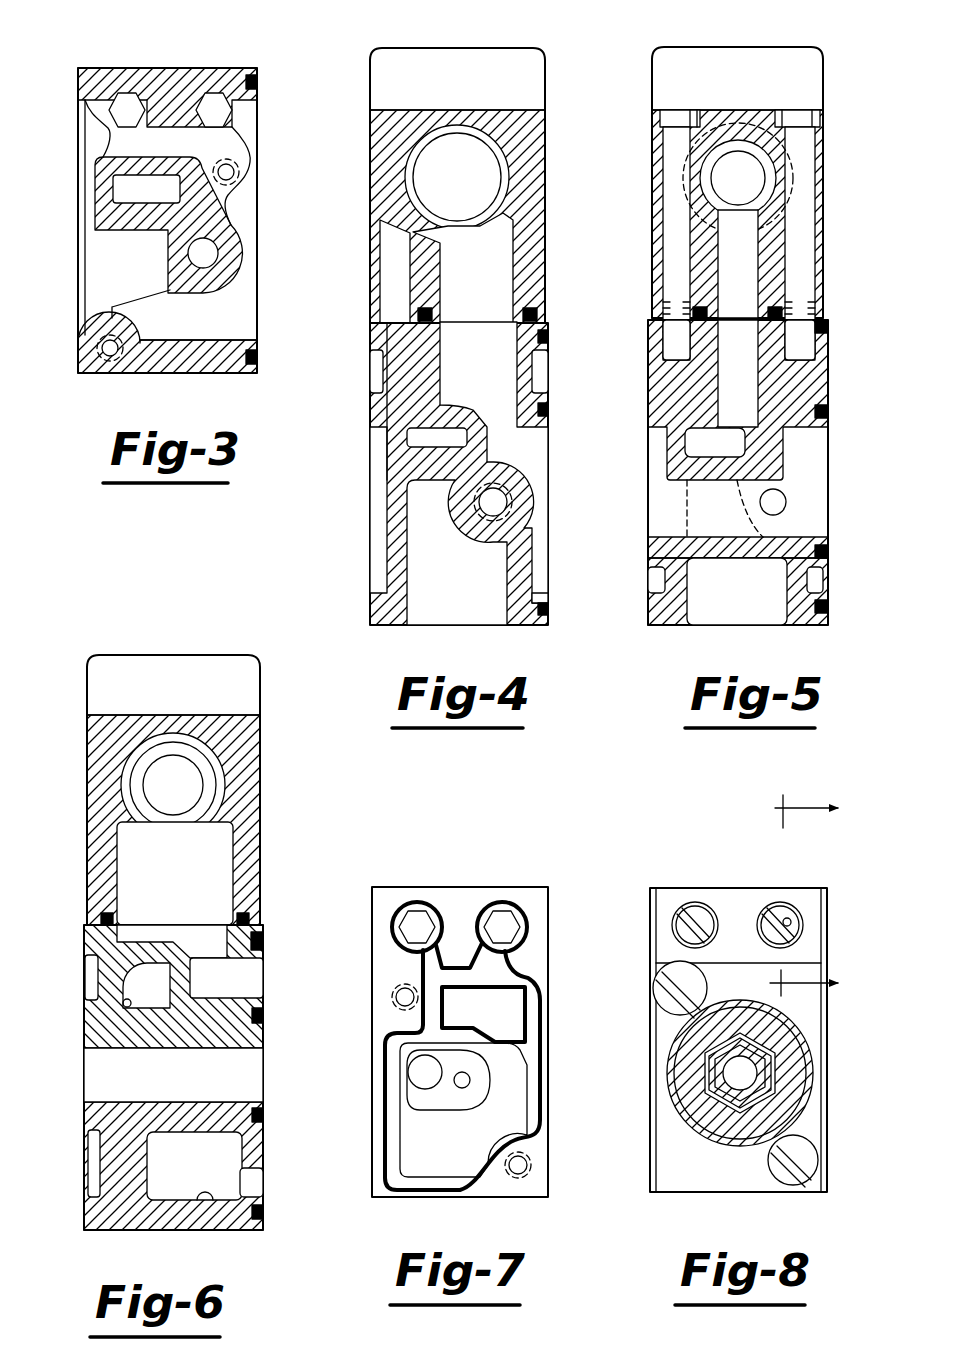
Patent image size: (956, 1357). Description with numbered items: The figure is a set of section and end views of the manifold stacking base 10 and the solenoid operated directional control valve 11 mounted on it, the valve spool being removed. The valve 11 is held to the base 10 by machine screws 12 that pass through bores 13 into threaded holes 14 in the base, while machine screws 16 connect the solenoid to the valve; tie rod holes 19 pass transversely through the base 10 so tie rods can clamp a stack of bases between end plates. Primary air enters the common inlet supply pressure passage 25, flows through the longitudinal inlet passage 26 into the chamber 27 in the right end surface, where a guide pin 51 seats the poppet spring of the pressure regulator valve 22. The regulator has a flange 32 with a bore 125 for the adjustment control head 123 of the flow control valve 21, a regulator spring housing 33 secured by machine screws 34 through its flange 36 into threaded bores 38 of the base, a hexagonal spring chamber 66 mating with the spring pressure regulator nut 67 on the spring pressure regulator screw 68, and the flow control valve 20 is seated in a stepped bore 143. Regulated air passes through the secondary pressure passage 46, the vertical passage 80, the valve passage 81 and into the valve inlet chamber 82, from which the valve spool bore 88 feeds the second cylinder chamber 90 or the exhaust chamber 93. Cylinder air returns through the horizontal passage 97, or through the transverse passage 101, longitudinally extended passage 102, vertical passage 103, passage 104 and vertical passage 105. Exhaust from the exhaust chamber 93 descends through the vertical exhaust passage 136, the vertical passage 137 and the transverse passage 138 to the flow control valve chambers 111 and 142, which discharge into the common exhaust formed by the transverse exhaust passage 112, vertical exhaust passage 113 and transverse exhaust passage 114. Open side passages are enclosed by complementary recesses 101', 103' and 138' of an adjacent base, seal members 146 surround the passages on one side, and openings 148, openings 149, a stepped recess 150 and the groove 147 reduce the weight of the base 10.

In FIG. 3, the manifold stacking base 10 is at (76, 327).
In FIG. 4, the manifold stacking base 10 is at (368, 608).
In FIG. 5, the manifold stacking base 10 is at (648, 622).
In FIG. 6, the manifold stacking base 10 is at (85, 830).
In FIG. 7, the manifold stacking base 10 is at (371, 1196).
In FIG. 8, the manifold stacking base 10 is at (648, 1196).
In FIG. 4, the solenoid operated directional control valve 11 is at (368, 150).
In FIG. 5, the solenoid operated directional control valve 11 is at (650, 165).
In FIG. 5, the machine screws 12 is at (672, 112).
In FIG. 4, the bores 13 is at (390, 262).
In FIG. 5, the bores 13 is at (672, 232).
In FIG. 5, the threaded holes 14 is at (667, 335).
In FIG. 8, the machine screws 16 is at (824, 897).
In FIG. 6, the tie rod holes 19 is at (262, 1072).
In FIG. 8, the flow control valve 20 is at (703, 918).
In FIG. 8, the flow control valve 21 is at (790, 918).
In FIG. 8, the pressure regulator valve 22 is at (666, 1074).
In FIG. 5, the common inlet supply pressure passage 25 is at (812, 545).
In FIG. 3, the inlet passage 26 is at (210, 253).
In FIG. 4, the inlet passage 26 is at (505, 505).
In FIG. 5, the inlet passage 26 is at (785, 503).
In FIG. 7, the inlet passage 26 is at (425, 1088).
In FIG. 7, the chamber 27 is at (485, 1080).
In FIG. 8, the flange 32 is at (818, 940).
In FIG. 8, the regulator spring housing 33 is at (676, 1060).
In FIG. 8, the machine screws 34 is at (664, 990).
In FIG. 8, the flange 36 is at (668, 1035).
In FIG. 3, the threaded bores 38 is at (232, 173).
In FIG. 7, the threaded bores 38 is at (398, 998).
In FIG. 3, the secondary pressure passage 46 is at (120, 195).
In FIG. 4, the secondary pressure passage 46 is at (425, 445).
In FIG. 5, the secondary pressure passage 46 is at (700, 440).
In FIG. 7, the secondary pressure passage 46 is at (515, 1013).
In FIG. 7, the guide pin 51 is at (462, 1088).
In FIG. 8, the spring chamber 66 is at (762, 1055).
In FIG. 8, the spring pressure regulator nut 67 is at (764, 1087).
In FIG. 8, the spring pressure regulator screw 68 is at (748, 1070).
In FIG. 5, the vertical passage 80 is at (760, 395).
In FIG. 5, the passage 81 is at (748, 245).
In FIG. 5, the valve inlet chamber 82 is at (750, 125).
In FIG. 5, the valve spool bore 88 is at (760, 178).
In FIG. 6, the valve spool bore 88 is at (190, 765).
In FIG. 4, the second cylinder chamber 90 is at (466, 140).
In FIG. 6, the exhaust chamber 93 is at (216, 797).
In FIG. 6, the horizontal passage 97 is at (125, 1000).
In FIG. 6, the transverse passage 101 is at (217, 1200).
In FIG. 6, the complementary recess 101' is at (63, 1163).
In FIG. 4, the longitudinally extended passage 102 is at (535, 600).
In FIG. 6, the longitudinally extended passage 102 is at (250, 1185).
In FIG. 4, the vertical passage 103 is at (524, 462).
In FIG. 4, the complementary recess 103' is at (346, 510).
In FIG. 4, the passage 104 is at (445, 393).
In FIG. 4, the vertical passage 105 is at (515, 250).
In FIG. 3, the flow control valve chamber 111 is at (112, 108).
In FIG. 7, the flow control valve chamber 111 is at (522, 930).
In FIG. 3, the transverse exhaust passage 112 is at (170, 128).
In FIG. 3, the vertical exhaust passage 113 is at (115, 270).
In FIG. 3, the transverse exhaust passage 114 is at (175, 322).
In FIG. 8, the adjustment control head 123 is at (770, 918).
In FIG. 8, the bore 125 is at (795, 922).
In FIG. 6, the vertical exhaust passage 136 is at (226, 845).
In FIG. 6, the vertical passage 137 is at (226, 920).
In FIG. 6, the transverse passage 138 is at (204, 986).
In FIG. 6, the complementary recess 138' is at (62, 973).
In FIG. 3, the flow control valve chamber 142 is at (214, 96).
In FIG. 7, the flow control valve chamber 142 is at (420, 913).
In FIG. 8, the stepped bore 143 is at (688, 905).
In FIG. 3, the seal member 146 is at (258, 78).
In FIG. 4, the seal member 146 is at (538, 330).
In FIG. 5, the seal member 146 is at (824, 325).
In FIG. 6, the seal member 146 is at (260, 938).
In FIG. 7, the groove 147 is at (440, 1190).
In FIG. 4, the openings 148 is at (380, 372).
In FIG. 5, the weight reducing openings 149 is at (655, 575).
In FIG. 4, the stepped recess 150 is at (500, 620).
In FIG. 5, the stepped recess 150 is at (692, 612).